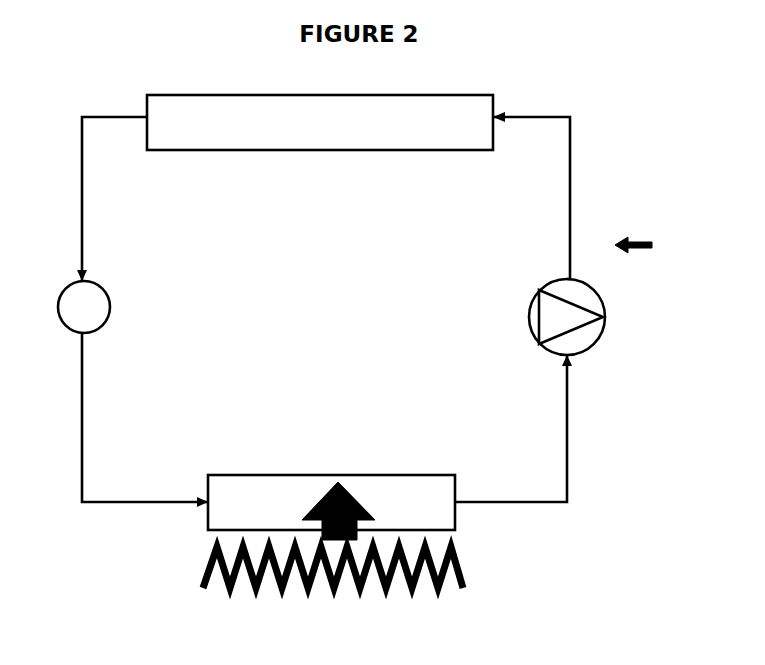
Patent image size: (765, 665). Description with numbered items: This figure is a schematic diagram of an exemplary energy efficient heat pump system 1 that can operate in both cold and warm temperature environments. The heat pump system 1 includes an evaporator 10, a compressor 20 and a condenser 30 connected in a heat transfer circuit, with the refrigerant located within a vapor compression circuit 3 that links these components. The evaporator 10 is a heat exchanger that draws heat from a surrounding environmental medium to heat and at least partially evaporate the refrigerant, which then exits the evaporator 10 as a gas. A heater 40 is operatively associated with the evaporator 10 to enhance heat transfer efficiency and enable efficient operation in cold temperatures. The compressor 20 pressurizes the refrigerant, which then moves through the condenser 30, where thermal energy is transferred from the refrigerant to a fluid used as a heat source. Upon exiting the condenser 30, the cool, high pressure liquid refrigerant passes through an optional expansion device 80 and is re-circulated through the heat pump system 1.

The heat pump system 1 is at (647, 245).
The vapor compression circuit 3 is at (570, 177).
The evaporator 10 is at (331, 507).
The compressor 20 is at (567, 317).
The condenser 30 is at (320, 122).
The heater 40 is at (334, 588).
The expansion device 80 is at (84, 307).